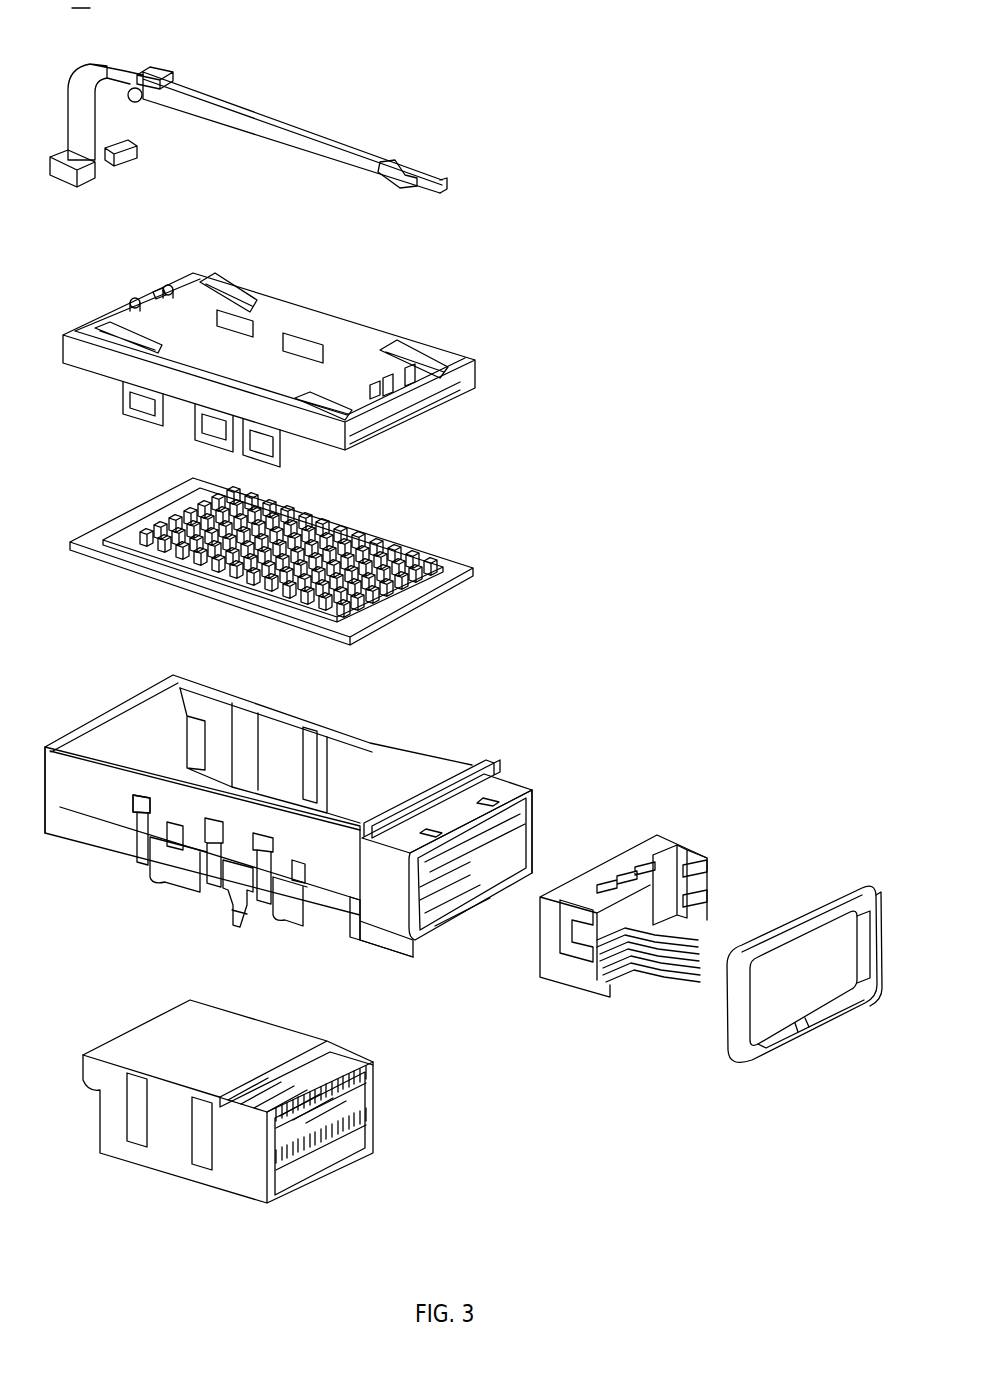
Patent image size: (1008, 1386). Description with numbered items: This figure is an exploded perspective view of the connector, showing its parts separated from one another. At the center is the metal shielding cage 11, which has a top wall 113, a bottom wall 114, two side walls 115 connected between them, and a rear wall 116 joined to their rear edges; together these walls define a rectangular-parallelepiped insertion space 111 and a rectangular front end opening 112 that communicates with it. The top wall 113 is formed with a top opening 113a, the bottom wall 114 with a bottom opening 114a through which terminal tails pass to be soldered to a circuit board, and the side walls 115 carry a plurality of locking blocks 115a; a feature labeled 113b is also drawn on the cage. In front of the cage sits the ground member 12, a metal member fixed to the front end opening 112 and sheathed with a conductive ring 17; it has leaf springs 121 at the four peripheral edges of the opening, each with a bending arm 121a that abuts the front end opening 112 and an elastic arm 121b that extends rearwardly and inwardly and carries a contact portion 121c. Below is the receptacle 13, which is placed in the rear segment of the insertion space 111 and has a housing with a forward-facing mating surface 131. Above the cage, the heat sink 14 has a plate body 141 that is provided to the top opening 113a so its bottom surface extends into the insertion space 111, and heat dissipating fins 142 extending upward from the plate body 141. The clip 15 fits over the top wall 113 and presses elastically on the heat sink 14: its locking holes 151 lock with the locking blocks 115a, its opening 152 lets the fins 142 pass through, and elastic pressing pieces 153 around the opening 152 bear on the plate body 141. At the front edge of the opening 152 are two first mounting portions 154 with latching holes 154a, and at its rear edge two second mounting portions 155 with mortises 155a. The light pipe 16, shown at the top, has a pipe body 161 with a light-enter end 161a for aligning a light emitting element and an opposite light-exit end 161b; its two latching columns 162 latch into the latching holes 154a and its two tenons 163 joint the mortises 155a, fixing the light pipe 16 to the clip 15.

The shielding cage 11 is at (321, 815).
The insertion space 111 is at (363, 764).
The front end opening 112 is at (524, 817).
The top wall 113 is at (462, 823).
The top opening 113a is at (350, 733).
The terminal slots 113b is at (462, 835).
The bottom wall 114 is at (427, 937).
The bottom opening 114a is at (330, 827).
The side walls 115 is at (192, 837).
The locking blocks 115a is at (140, 847).
The rear wall 116 is at (125, 732).
The ground member 12 is at (624, 937).
The leaf springs 121 is at (621, 1024).
The bending arm 121a is at (651, 1015).
The elastic arm 121b is at (617, 952).
The contact portion 121c is at (620, 950).
The receptacle 13 is at (261, 1136).
The mating surface 131 is at (375, 1105).
The heat sink 14 is at (288, 556).
The plate body 141 is at (420, 567).
The heat dissipating fins 142 is at (395, 560).
The clip 15 is at (296, 355).
The locking holes 151 is at (284, 456).
The opening 152 is at (330, 320).
The elastic pressing pieces 153 is at (420, 348).
The first mounting portions 154 is at (415, 398).
The latching hole 154a is at (378, 392).
The second mounting portions 155 is at (165, 287).
The mortise 155a is at (163, 290).
The light pipe 16 is at (282, 115).
The pipe body 161 is at (345, 147).
The light-enter end 161a is at (97, 180).
The light-exit end 161b is at (448, 189).
The latching columns 162 is at (412, 170).
The tenons 163 is at (160, 76).
The conductive ring 17 is at (832, 900).